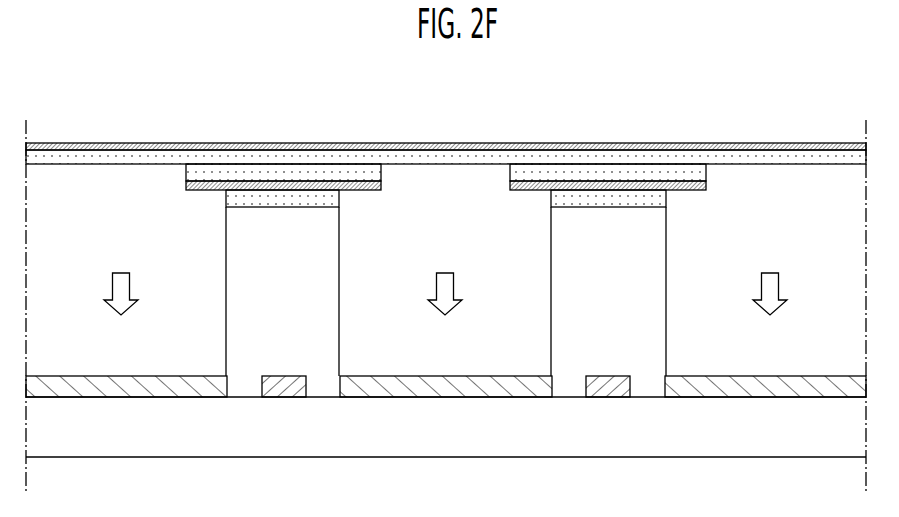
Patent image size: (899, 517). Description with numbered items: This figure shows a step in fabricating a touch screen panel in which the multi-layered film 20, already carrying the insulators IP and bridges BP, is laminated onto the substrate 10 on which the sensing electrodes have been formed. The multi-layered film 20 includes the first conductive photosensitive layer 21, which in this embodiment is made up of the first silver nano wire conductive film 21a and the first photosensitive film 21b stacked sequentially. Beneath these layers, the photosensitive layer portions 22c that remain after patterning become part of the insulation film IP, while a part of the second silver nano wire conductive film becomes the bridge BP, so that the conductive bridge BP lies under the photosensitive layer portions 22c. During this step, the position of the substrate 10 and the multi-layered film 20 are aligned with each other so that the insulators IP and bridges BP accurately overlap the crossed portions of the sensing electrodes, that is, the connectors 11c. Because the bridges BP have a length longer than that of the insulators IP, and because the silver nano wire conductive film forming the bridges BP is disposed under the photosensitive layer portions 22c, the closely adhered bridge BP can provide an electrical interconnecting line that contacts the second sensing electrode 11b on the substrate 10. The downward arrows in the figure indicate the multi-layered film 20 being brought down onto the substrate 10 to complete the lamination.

The substrate 10 is at (481, 446).
The second sensing electrode 11b is at (190, 397).
The connector 11c is at (272, 397).
The multi-layered film 20 is at (446, 113).
The first conductive photosensitive layer 21 is at (446, 113).
The first silver nano wire conductive film 21a is at (127, 143).
The first photosensitive film 21b is at (162, 157).
The photosensitive layer portion 22c is at (188, 172).
The bridge BP is at (190, 190).
The insulator IP is at (338, 197).